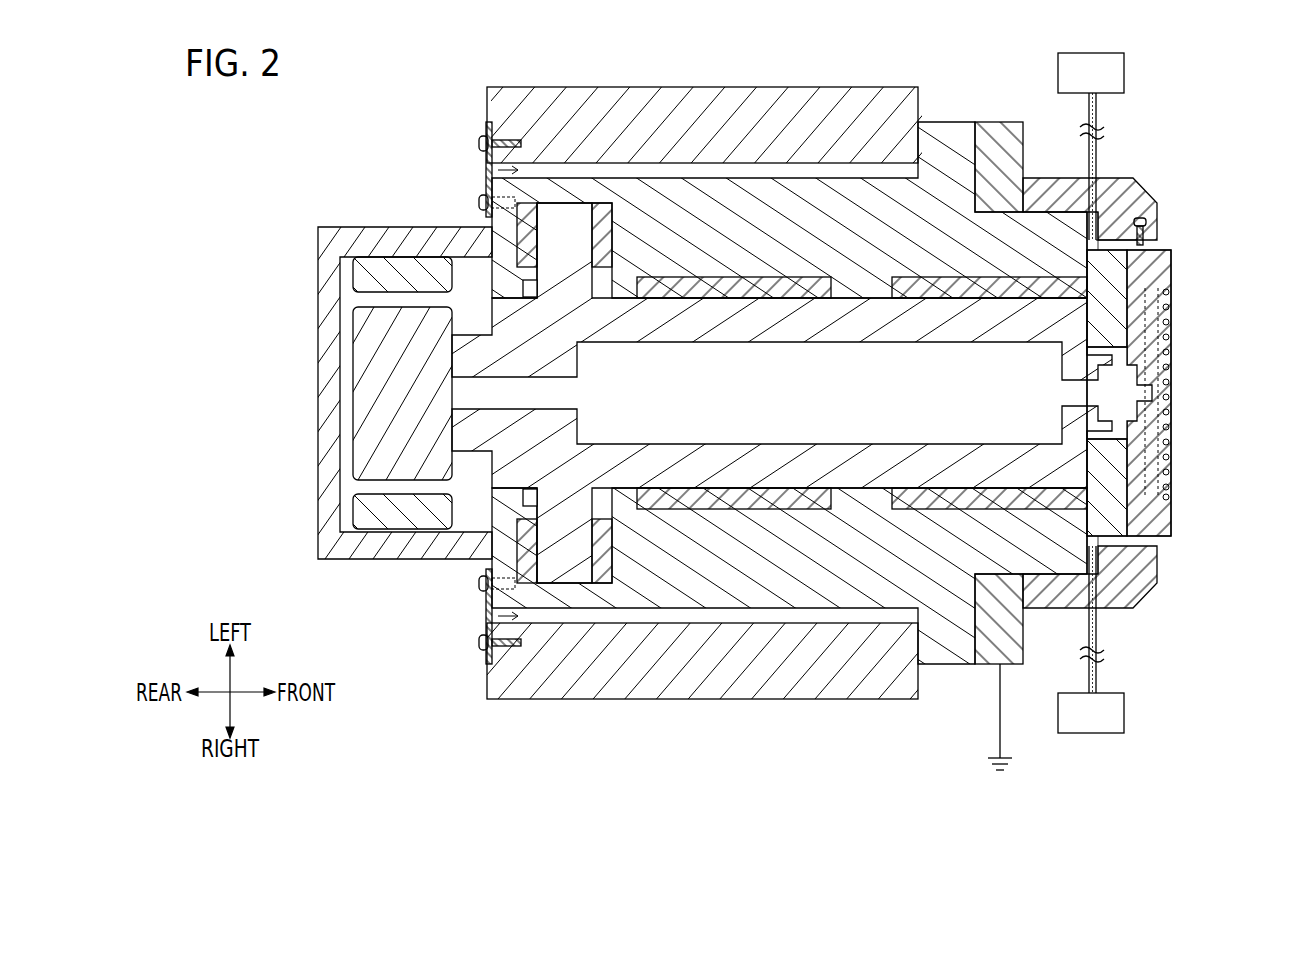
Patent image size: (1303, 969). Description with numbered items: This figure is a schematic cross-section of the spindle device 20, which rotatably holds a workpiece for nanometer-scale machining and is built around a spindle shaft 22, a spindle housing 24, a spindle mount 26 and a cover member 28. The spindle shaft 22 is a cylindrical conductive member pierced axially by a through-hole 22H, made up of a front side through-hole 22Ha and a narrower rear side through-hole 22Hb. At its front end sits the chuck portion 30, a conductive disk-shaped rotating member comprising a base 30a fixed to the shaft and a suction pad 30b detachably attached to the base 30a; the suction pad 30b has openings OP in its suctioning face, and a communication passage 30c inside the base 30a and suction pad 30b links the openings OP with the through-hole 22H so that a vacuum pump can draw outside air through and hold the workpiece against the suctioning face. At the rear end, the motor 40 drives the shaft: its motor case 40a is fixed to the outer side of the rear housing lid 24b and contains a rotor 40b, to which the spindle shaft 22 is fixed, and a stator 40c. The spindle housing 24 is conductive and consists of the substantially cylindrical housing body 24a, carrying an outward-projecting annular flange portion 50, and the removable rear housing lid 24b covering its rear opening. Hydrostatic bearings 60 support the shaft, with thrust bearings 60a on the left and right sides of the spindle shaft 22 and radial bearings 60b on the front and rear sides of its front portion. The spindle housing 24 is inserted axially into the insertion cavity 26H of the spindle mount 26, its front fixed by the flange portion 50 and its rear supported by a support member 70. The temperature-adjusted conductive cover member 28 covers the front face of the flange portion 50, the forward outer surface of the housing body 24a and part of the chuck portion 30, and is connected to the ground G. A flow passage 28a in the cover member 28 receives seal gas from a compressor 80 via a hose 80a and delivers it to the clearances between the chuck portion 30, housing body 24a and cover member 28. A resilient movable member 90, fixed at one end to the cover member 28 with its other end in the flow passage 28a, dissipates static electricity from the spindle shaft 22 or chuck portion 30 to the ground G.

The spindle device 20 is at (1158, 76).
The spindle shaft 22 is at (691, 481).
The through-hole 22H is at (600, 586).
The front side through-hole 22Ha is at (696, 434).
The rear side through-hole 22Hb is at (506, 408).
The spindle housing 24 is at (651, 414).
The housing body 24a is at (813, 222).
The rear housing lid 24b is at (493, 188).
The spindle mount 26 is at (678, 394).
The insertion cavity 26H is at (497, 170).
The cover member 28 is at (1090, 404).
The flow passage 28a is at (1083, 207).
The chuck portion 30 is at (1180, 400).
The base 30a is at (1110, 312).
The suction pad 30b is at (1165, 532).
The communication passage 30c is at (1140, 258).
The motor 40 is at (417, 393).
The motor case 40a is at (328, 350).
The rotor 40b is at (380, 408).
The stator 40c is at (355, 270).
The flange portion 50 is at (948, 138).
The bearings 60 is at (802, 393).
The thrust bearings 60a is at (603, 532).
The radial bearings 60b is at (737, 494).
The support member 70 is at (487, 124).
The compressor 80 is at (1096, 395).
The hose 80a is at (1097, 118).
The movable member 90 is at (1168, 256).
The openings OP is at (1172, 437).
The ground G is at (1003, 760).